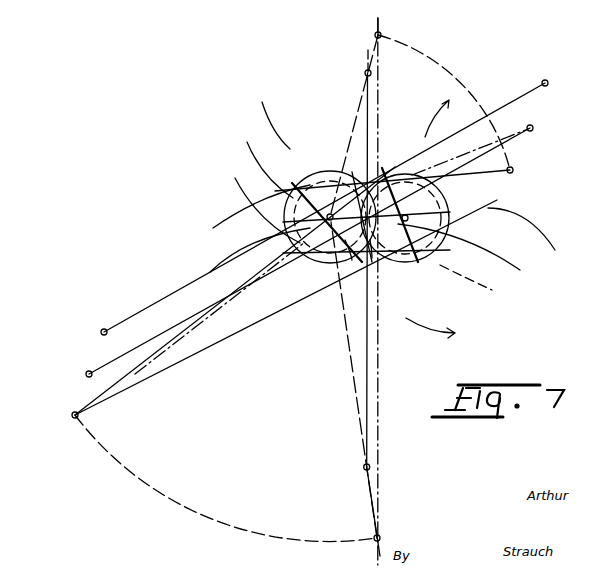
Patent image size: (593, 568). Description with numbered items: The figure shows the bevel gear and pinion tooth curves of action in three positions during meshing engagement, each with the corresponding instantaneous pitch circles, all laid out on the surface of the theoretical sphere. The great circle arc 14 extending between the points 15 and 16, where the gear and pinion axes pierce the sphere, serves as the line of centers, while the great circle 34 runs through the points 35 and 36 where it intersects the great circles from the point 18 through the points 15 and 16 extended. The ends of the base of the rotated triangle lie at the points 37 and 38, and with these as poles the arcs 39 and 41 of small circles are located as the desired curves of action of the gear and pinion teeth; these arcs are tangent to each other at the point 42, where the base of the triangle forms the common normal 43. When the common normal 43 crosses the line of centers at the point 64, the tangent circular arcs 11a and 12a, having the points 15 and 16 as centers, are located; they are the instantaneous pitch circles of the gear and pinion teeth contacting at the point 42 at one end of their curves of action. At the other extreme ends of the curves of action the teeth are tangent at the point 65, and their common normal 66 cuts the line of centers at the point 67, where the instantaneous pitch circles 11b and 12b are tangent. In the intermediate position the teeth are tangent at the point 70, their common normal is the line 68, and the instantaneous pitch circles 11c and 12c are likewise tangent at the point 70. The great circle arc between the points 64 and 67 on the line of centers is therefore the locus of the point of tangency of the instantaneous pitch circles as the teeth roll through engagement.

The instantaneous pitch circle of the gear 11a is at (487, 292).
The instantaneous pitch circle of the gear 11b is at (546, 246).
The instantaneous pitch circle of the gear 11c is at (520, 271).
The instantaneous pitch circle of the pinion 12a is at (498, 200).
The instantaneous pitch circle of the pinion 12b is at (462, 130).
The instantaneous pitch circle of the pinion 12c is at (472, 166).
The great circle arc 14 is at (368, 362).
The intersection of gear axis with sphere 15 is at (363, 466).
The intersection of pinion axis with sphere 16 is at (365, 73).
The point on great circle arc 18 is at (330, 220).
The great circle 34 is at (378, 384).
The intersection point 35 is at (379, 535).
The intersection point 36 is at (380, 33).
The end of rotated triangle base 37 is at (73, 418).
The end of rotated triangle base 38 is at (514, 170).
The arc of small circle 39 is at (275, 191).
The arc of small circle 41 is at (323, 177).
The point of tangency 42 is at (352, 260).
The common normal 43 is at (166, 366).
The point on line of centers 64 is at (373, 260).
The point of tangency 65 is at (384, 172).
The common normal 66 is at (150, 302).
The point on line of centers 67 is at (360, 178).
The common normal 68 is at (158, 340).
The point of tangency 70 is at (405, 221).